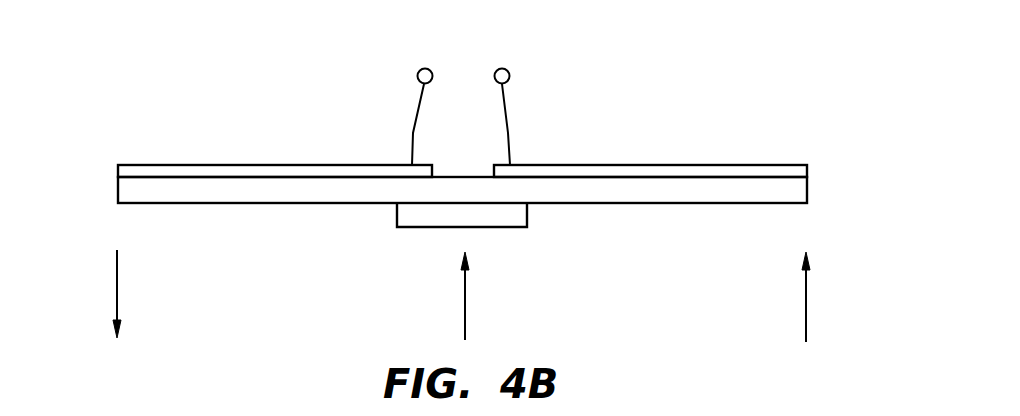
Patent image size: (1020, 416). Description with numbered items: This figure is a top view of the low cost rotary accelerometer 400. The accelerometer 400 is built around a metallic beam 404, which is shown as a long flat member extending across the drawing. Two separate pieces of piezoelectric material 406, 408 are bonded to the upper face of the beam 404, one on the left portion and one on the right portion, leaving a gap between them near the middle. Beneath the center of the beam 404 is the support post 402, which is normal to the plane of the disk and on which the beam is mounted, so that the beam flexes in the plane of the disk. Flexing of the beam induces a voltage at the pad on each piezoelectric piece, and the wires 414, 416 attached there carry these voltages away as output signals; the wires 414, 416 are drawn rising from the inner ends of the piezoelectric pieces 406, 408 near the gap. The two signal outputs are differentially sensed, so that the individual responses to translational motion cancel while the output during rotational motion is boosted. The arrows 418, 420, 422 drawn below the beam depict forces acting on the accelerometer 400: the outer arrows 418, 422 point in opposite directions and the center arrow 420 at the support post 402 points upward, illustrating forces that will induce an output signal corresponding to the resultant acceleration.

The accelerometer 400 is at (737, 53).
The support post 402 is at (514, 216).
The metallic beam 404 is at (130, 189).
The piezoelectric material 406 is at (190, 170).
The piezoelectric material 408 is at (693, 172).
The wire 414 is at (411, 133).
The wire 416 is at (509, 133).
The arrow 418 is at (128, 283).
The arrow 420 is at (475, 286).
The arrow 422 is at (797, 290).